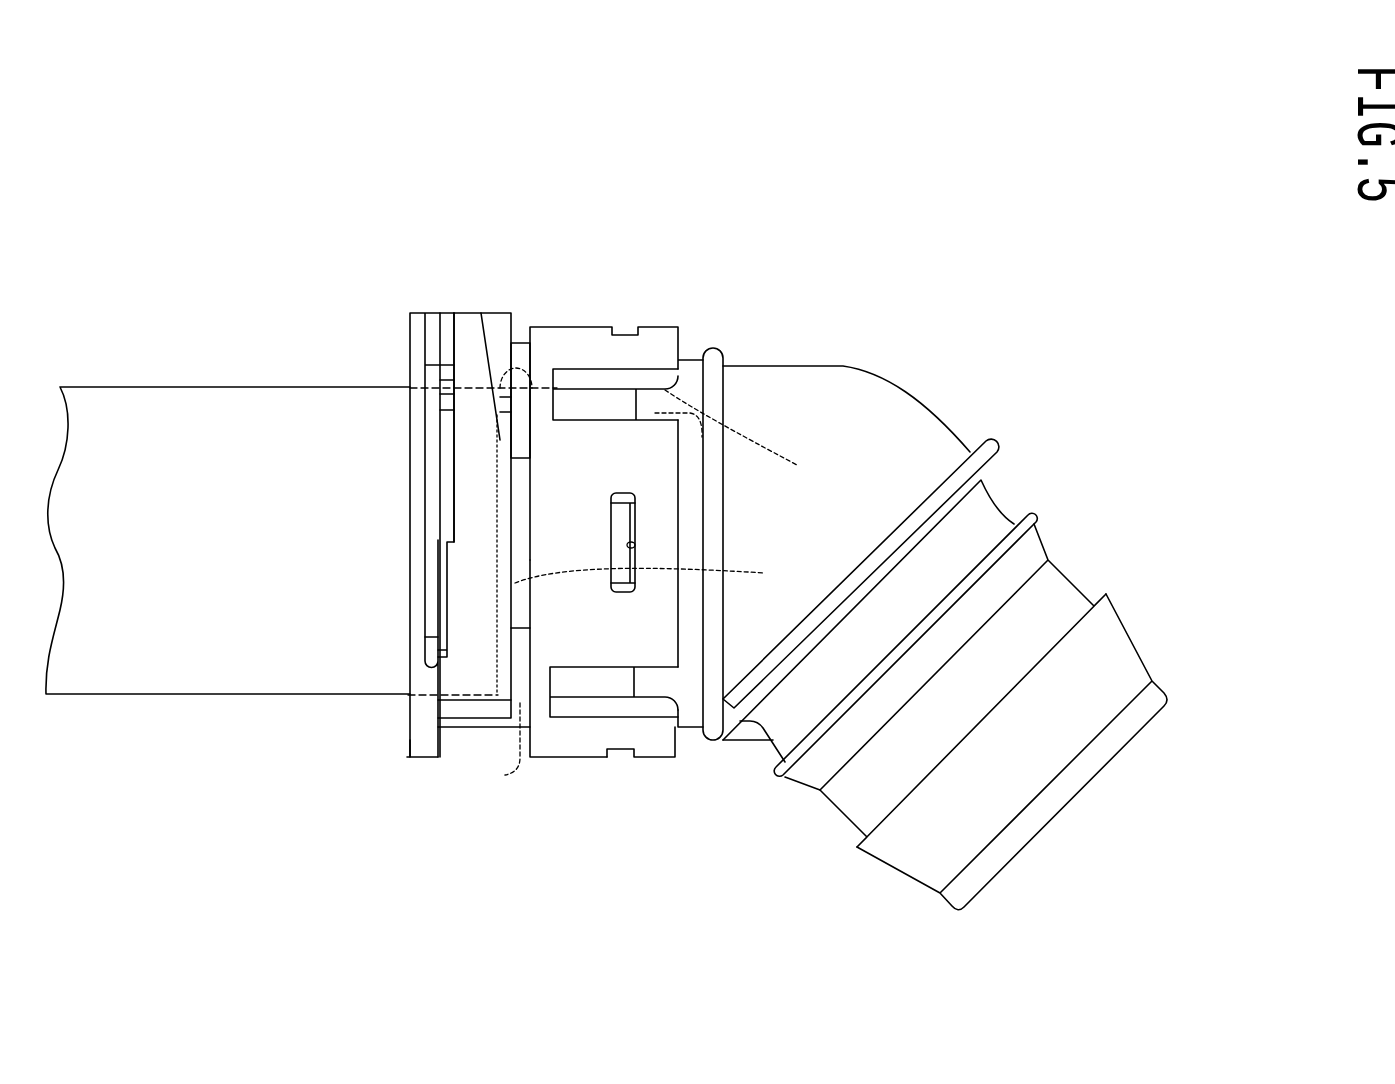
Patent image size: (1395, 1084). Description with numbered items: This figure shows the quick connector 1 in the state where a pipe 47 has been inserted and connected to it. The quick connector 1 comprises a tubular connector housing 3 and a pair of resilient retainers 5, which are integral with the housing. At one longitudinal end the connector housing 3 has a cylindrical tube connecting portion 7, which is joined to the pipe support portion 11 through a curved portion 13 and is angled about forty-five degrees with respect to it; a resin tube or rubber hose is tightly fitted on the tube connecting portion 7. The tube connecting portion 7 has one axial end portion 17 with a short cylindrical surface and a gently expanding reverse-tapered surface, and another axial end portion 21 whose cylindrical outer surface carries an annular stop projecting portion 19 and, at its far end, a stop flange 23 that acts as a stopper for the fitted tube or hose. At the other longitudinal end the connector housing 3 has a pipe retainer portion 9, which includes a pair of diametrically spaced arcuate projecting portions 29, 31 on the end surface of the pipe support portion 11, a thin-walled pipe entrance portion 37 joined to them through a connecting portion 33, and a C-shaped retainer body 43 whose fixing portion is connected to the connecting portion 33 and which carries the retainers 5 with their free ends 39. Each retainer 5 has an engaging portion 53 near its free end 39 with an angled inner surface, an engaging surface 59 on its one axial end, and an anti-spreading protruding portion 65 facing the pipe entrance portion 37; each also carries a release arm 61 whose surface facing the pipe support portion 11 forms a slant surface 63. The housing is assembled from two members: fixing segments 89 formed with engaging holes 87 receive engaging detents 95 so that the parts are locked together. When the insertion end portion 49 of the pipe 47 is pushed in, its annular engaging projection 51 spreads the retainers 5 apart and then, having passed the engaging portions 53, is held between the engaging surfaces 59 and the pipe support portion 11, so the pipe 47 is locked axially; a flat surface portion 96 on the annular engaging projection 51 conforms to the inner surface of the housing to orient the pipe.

The quick connector 1 is at (404, 273).
The connector housing 3 is at (789, 316).
The retainer 5 is at (471, 523).
The tube connecting portion 7 is at (1058, 515).
The pipe retainer portion 9 is at (464, 289).
The pipe support portion 11 is at (612, 402).
The curved portion 13 is at (823, 423).
The one axial end portion 17 is at (1103, 673).
The annular stop projecting portion 19 is at (1023, 557).
The other axial end portion 21 is at (872, 775).
The stop flange 23 is at (984, 457).
The arcuate projecting portion 29 is at (521, 362).
The arcuate projecting portion 31 is at (518, 682).
The connecting portion 33 is at (507, 333).
The pipe entrance portion 37 is at (428, 700).
The free end 39 is at (463, 678).
The retainer body 43 is at (515, 519).
The pipe 47 is at (182, 445).
The insertion end portion 49 is at (694, 427).
The annular engaging projection 51 is at (661, 572).
The engaging portion 53 is at (452, 590).
The engaging surface 59 is at (511, 648).
The release arm 61 is at (478, 412).
The slant surface 63 is at (492, 333).
The anti-spreading protruding portion 65 is at (452, 680).
The engaging hole 87 is at (635, 548).
The fixing segment 89 is at (578, 598).
The engaging detent 95 is at (635, 540).
The flat surface portion 96 is at (495, 749).